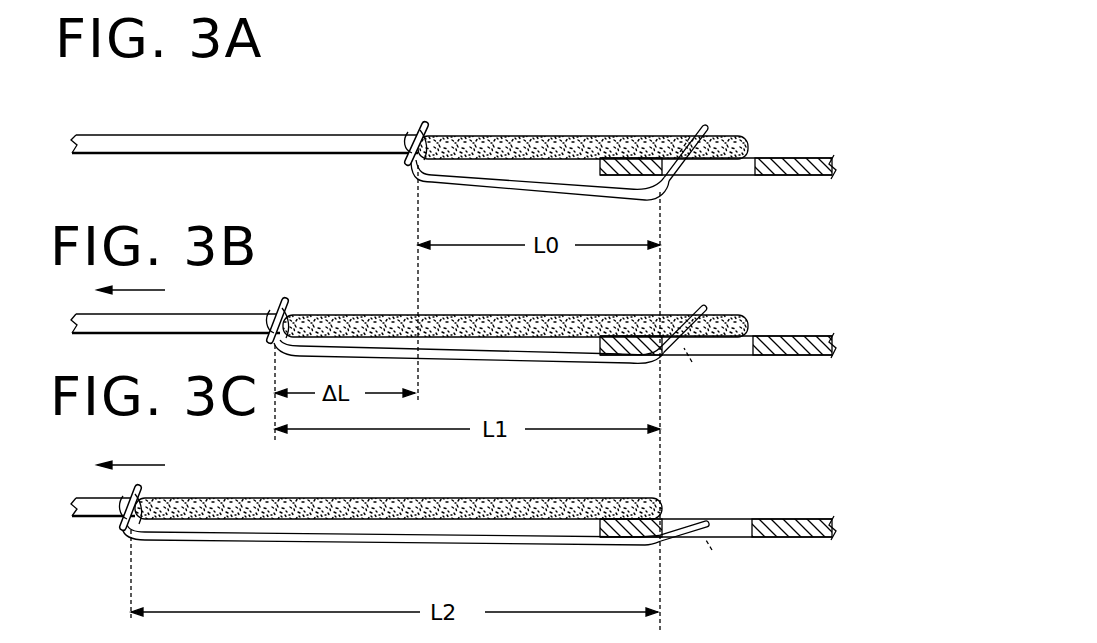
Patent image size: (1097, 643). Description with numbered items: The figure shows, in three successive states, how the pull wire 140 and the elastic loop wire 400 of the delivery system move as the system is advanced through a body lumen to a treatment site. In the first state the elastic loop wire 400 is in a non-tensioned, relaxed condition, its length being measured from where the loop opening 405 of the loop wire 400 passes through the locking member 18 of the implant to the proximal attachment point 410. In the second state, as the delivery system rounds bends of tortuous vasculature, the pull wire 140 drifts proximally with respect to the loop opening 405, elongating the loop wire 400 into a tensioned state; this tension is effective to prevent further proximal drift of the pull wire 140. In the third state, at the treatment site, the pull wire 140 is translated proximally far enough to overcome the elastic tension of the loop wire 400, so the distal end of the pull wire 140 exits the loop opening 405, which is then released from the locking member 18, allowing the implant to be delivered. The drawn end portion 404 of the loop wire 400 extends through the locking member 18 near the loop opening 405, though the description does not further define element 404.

In FIG. 3A, the locking member 18 is at (792, 157).
In FIG. 3B, the locking member 18 is at (802, 337).
In FIG. 3C, the locking member 18 is at (810, 520).
In FIG. 3A, the pull wire 140 is at (230, 110).
In FIG. 3B, the pull wire 140 is at (206, 318).
In FIG. 3C, the pull wire 140 is at (102, 510).
In FIG. 3A, the elastic loop wire 400 is at (493, 180).
In FIG. 3B, the elastic loop wire 400 is at (552, 353).
In FIG. 3C, the elastic loop wire 400 is at (385, 540).
In FIG. 3A, the suture strand end 404 is at (706, 126).
In FIG. 3B, the suture strand end 404 is at (704, 310).
In FIG. 3C, the suture strand end 404 is at (705, 522).
In FIG. 3A, the loop opening 405 is at (690, 135).
In FIG. 3B, the loop opening 405 is at (692, 362).
In FIG. 3C, the loop opening 405 is at (712, 550).
In FIG. 3A, the proximal attachment point 410 is at (417, 125).
In FIG. 3B, the proximal attachment point 410 is at (284, 308).
In FIG. 3C, the proximal attachment point 410 is at (122, 492).